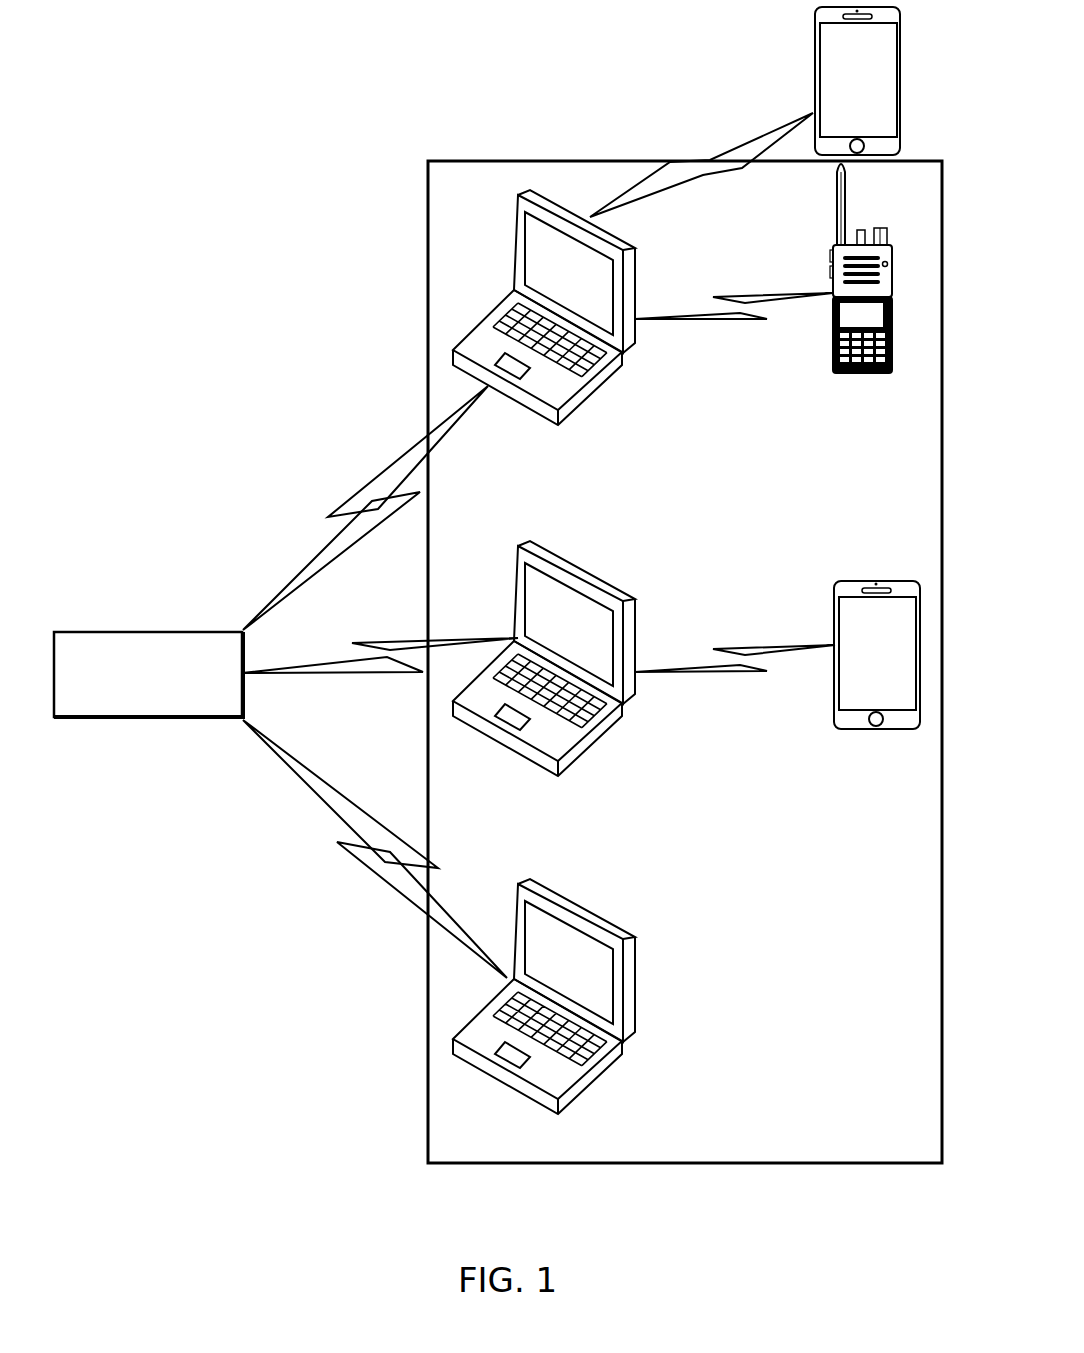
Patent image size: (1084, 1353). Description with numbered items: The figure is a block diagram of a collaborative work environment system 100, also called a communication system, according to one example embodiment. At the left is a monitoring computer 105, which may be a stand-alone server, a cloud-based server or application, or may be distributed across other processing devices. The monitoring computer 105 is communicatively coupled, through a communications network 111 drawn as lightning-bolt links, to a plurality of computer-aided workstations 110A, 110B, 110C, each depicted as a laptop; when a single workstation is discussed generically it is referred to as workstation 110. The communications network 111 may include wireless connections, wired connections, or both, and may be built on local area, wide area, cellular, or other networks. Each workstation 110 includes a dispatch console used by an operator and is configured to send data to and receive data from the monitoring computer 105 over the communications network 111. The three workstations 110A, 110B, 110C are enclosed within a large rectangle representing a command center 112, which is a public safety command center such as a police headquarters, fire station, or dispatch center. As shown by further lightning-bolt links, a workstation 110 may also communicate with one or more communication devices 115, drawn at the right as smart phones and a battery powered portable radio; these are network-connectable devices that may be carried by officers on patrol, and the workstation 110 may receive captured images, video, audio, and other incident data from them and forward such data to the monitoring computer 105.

The collaborative work environment system 100 is at (157, 67).
The monitoring computer 105 is at (150, 718).
The workstation 110 is at (586, 674).
The first workstation 110A is at (600, 391).
The second workstation 110B is at (596, 746).
The third workstation 110C is at (639, 995).
The communications network 111 is at (303, 868).
The command center 112 is at (428, 296).
The communication device 115 is at (815, 58).